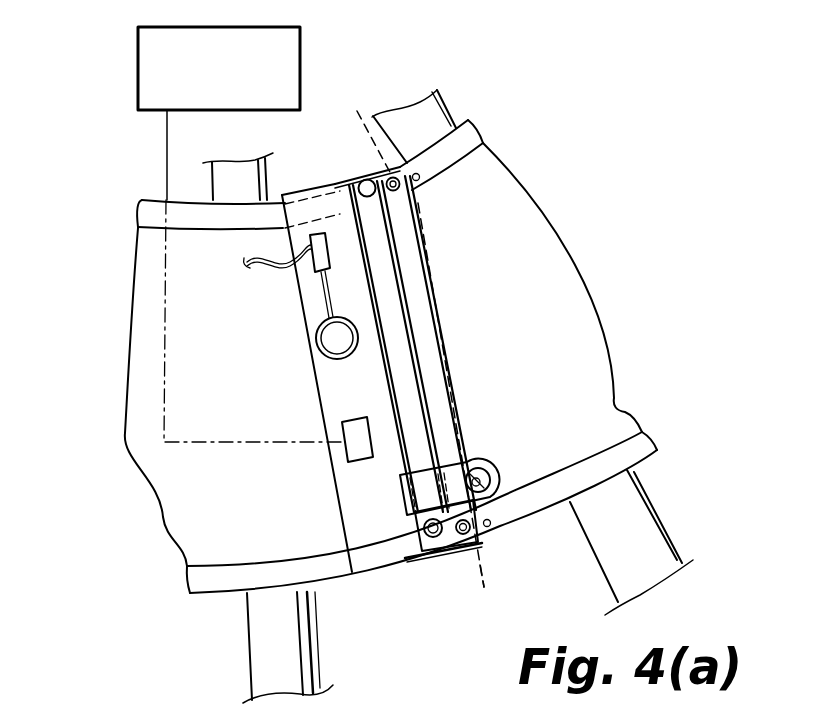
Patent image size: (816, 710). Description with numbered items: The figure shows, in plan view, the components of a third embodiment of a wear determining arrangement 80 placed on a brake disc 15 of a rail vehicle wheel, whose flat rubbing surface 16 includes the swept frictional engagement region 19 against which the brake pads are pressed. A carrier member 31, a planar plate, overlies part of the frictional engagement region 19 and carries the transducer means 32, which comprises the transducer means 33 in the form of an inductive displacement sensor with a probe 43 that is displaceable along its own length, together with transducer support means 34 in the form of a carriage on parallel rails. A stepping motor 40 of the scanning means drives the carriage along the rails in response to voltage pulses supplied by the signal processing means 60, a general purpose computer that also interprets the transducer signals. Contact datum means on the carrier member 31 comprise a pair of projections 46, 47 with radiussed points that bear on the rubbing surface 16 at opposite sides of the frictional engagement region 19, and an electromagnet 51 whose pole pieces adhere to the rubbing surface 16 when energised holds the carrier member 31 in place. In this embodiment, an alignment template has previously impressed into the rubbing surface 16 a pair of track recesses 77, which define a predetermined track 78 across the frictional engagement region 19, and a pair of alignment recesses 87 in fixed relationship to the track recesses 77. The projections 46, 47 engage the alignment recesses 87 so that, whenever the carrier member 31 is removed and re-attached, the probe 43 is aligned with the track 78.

The signal processing means 60 is at (141, 83).
The wear determining arrangement 80 is at (323, 178).
The projection 46 is at (363, 130).
The brake disc 15 is at (459, 117).
The rubbing surface 16 is at (471, 123).
The frictional engagement region 19 is at (492, 196).
The track recesses 77 is at (421, 178).
The alignment recesses 87 is at (414, 232).
The carrier member 31 is at (306, 310).
The electromagnet 51 is at (331, 343).
The track 78 is at (455, 383).
The projection 47 is at (492, 592).
The transducer means 33 is at (489, 468).
The transducer means 32 is at (507, 471).
The probe 43 is at (494, 494).
The stepping motor 40 is at (430, 552).
The transducer support means 34 is at (399, 527).